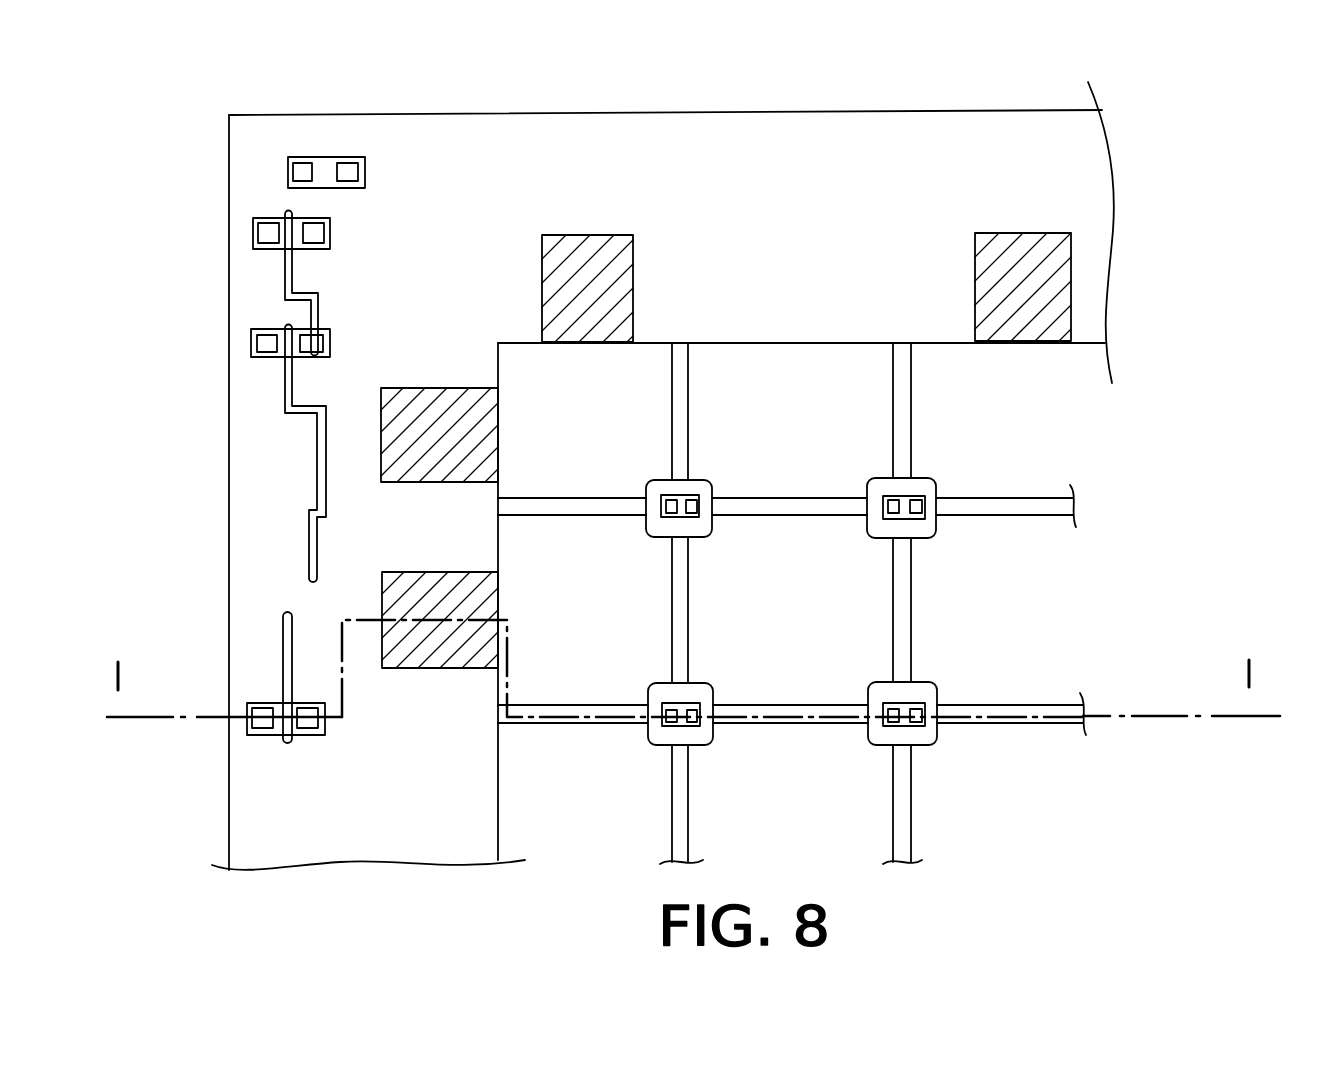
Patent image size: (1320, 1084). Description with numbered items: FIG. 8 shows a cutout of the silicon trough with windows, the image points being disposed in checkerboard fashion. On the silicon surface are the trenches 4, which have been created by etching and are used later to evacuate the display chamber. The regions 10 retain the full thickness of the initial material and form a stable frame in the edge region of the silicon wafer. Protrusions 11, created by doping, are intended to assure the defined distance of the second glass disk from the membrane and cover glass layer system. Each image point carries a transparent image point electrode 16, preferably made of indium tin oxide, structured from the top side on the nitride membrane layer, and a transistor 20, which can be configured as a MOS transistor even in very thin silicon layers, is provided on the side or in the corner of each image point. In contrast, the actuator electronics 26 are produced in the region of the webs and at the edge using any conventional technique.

The trenches 4 is at (442, 638).
The regions 10 is at (333, 492).
The protrusions 11 is at (937, 482).
The transparent image point electrode 16 is at (853, 620).
The transistor 20 is at (890, 722).
The actuator electronics 26 is at (270, 347).